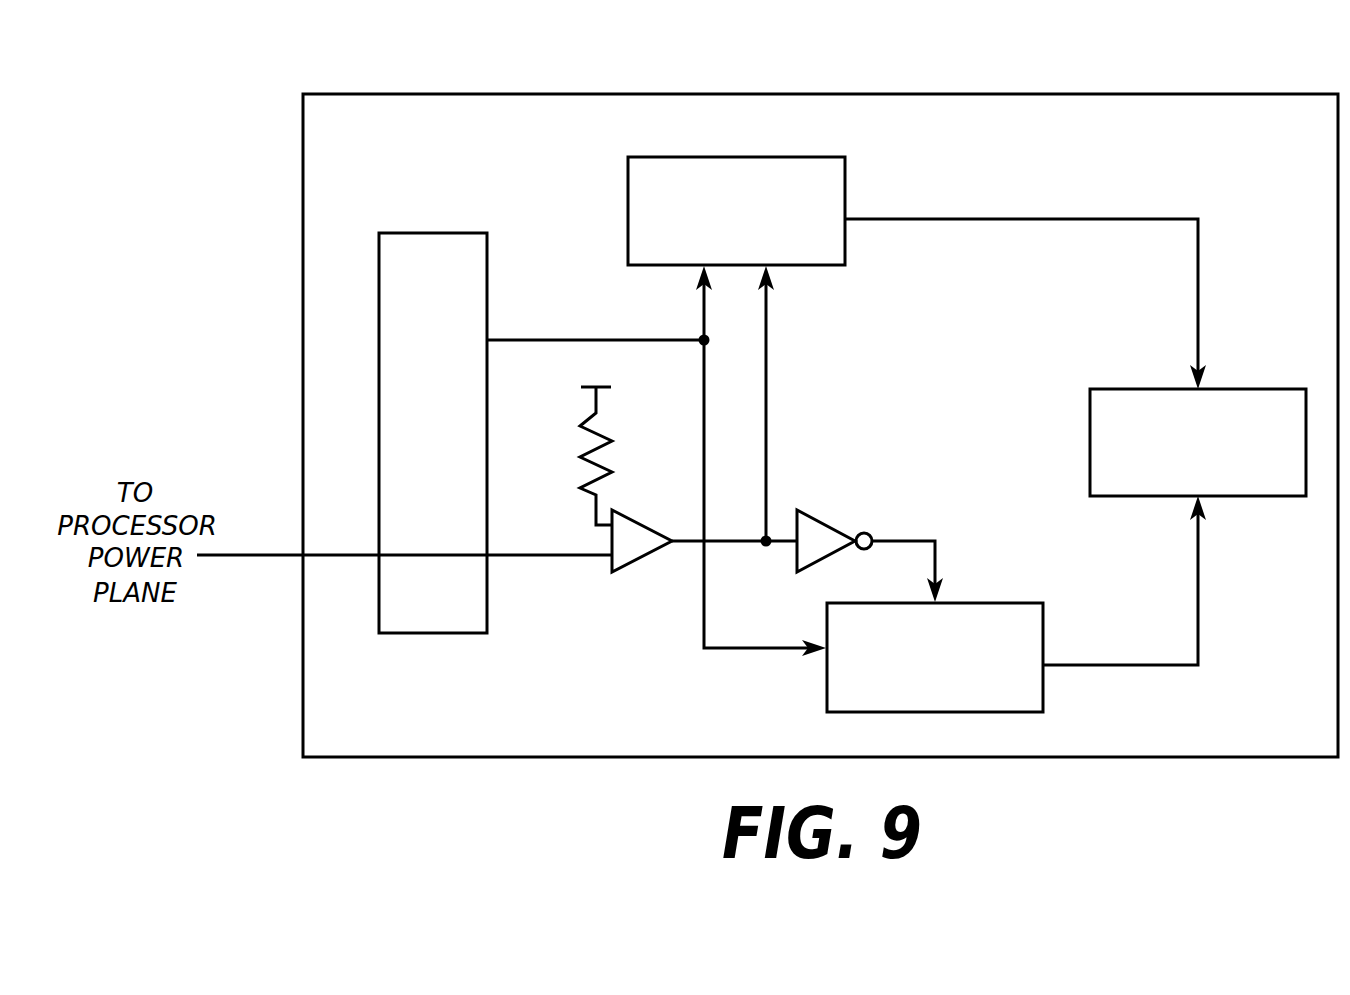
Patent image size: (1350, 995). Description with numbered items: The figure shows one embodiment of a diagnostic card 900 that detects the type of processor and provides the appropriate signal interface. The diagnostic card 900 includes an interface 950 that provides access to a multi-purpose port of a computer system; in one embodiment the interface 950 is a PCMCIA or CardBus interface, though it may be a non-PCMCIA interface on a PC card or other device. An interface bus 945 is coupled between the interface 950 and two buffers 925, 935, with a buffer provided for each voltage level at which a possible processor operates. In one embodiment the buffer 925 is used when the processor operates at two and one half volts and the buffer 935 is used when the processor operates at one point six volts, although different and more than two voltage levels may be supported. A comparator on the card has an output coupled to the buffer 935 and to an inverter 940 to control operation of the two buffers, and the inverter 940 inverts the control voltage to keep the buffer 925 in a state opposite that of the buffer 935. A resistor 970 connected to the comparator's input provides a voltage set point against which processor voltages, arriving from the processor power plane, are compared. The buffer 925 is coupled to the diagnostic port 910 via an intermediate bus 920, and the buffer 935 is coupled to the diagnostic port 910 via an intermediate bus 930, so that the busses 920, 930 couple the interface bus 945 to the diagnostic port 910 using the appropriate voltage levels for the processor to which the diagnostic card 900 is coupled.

The diagnostic card 900 is at (597, 62).
The diagnostic port 910 is at (1294, 480).
The intermediate bus 920 is at (1124, 581).
The buffer 925 is at (1030, 696).
The intermediate bus 930 is at (1025, 290).
The buffer 935 is at (833, 251).
The inverter 940 is at (845, 505).
The interface bus 945 is at (656, 461).
The interface 950 is at (455, 616).
The resistor 970 is at (642, 433).